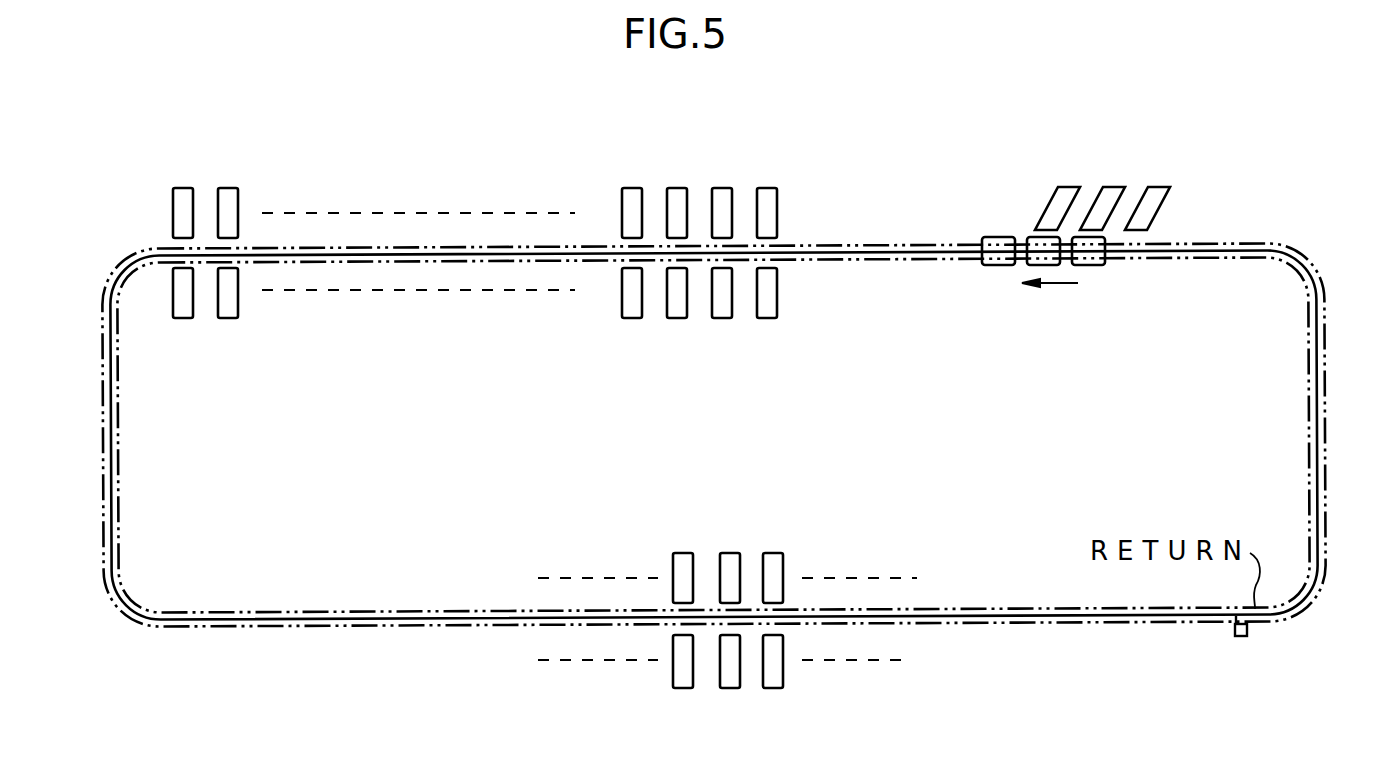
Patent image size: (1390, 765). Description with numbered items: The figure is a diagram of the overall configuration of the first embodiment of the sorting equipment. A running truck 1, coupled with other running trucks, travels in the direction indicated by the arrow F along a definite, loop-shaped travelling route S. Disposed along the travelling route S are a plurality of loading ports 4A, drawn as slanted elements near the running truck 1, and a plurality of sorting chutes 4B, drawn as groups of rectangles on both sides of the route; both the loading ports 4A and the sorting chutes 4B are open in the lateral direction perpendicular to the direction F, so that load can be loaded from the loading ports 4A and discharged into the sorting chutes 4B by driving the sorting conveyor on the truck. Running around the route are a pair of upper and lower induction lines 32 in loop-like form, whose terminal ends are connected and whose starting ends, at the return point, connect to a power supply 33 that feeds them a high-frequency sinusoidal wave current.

The running truck 1 is at (992, 237).
The loading ports 4A is at (1052, 212).
The sorting chutes 4B is at (770, 192).
The induction lines 32 is at (115, 440).
The power supply 33 is at (1242, 637).
The travelling route S is at (740, 435).
The direction of travel F is at (1050, 283).